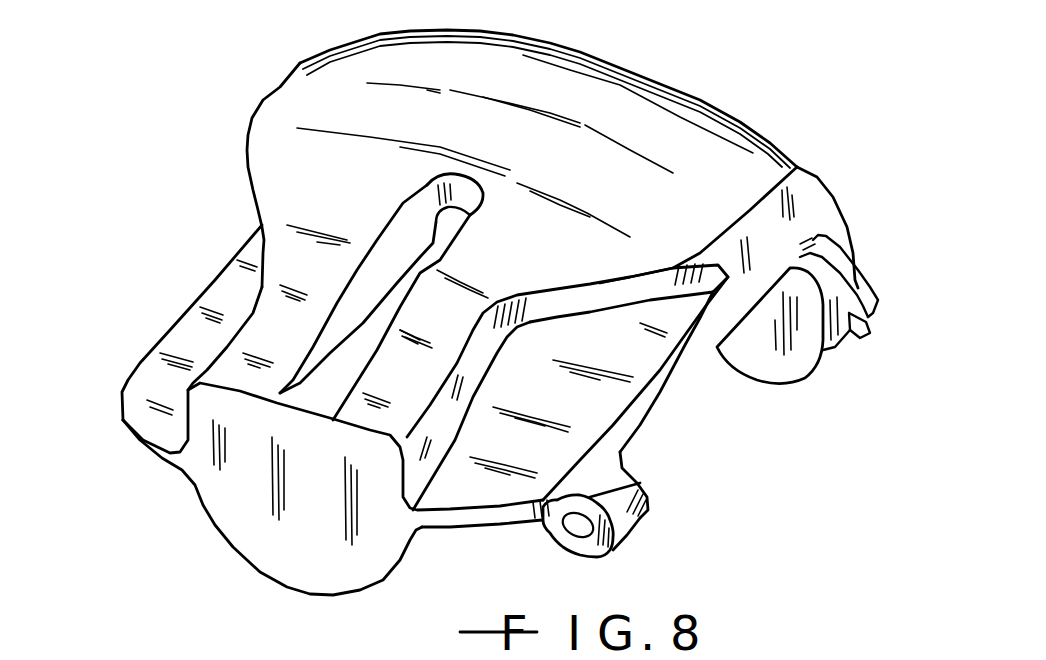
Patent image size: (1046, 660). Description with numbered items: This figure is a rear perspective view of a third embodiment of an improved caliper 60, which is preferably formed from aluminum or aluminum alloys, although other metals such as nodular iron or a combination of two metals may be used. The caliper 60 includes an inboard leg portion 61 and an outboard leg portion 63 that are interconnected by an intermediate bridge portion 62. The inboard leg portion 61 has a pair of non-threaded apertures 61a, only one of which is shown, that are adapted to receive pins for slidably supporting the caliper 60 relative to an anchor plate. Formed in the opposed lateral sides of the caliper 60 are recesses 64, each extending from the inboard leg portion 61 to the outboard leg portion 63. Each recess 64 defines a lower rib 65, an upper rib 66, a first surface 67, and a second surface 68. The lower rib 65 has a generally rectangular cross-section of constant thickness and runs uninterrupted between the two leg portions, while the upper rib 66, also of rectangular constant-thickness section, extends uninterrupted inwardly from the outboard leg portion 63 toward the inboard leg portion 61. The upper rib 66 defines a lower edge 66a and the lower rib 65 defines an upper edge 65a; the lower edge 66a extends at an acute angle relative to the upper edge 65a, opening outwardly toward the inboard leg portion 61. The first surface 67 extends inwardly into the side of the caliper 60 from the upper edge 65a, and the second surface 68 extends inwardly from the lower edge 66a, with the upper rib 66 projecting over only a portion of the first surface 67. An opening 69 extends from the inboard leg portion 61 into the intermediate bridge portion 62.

The caliper 60 is at (500, 312).
The inboard leg portion 61 is at (655, 523).
The non-threaded apertures 61a is at (534, 544).
The intermediate bridge portion 62 is at (520, 189).
The outboard leg portion 63 is at (797, 336).
The recesses 64 is at (428, 459).
The lower rib 65 is at (688, 372).
The upper edge of the lower rib 65a is at (670, 388).
The upper rib 66 is at (567, 315).
The lower edge of the upper rib 66a is at (621, 326).
The first surface 67 is at (420, 371).
The second surface 68 is at (493, 416).
The opening 69 is at (409, 297).